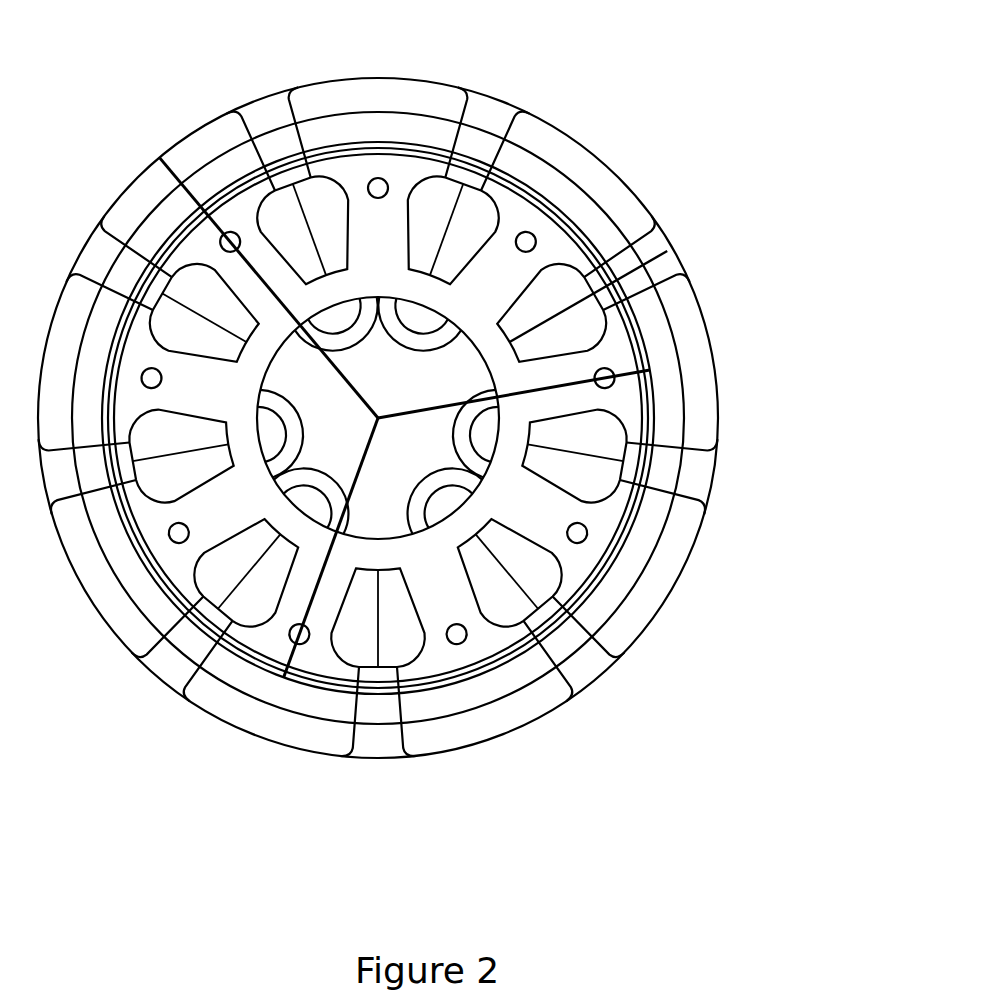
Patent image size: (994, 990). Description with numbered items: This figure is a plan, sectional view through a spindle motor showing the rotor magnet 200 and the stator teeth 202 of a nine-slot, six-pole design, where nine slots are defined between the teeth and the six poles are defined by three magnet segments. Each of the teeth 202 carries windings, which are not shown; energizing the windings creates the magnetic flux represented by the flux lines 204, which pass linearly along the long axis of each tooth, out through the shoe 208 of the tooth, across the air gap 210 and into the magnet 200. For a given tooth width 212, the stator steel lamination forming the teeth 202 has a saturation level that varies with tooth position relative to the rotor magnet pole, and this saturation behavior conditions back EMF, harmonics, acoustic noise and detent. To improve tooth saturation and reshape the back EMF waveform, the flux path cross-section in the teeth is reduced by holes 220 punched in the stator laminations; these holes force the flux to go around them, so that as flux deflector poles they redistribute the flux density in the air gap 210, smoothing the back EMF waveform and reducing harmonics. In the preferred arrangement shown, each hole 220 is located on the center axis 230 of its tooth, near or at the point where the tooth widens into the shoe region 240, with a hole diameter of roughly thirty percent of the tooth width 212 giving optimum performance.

The magnet 200 is at (578, 282).
The stator teeth 202 is at (567, 490).
The flux lines 204 is at (400, 72).
The shoe 208 is at (667, 251).
The air gap 210 is at (533, 170).
The tooth width 212 is at (573, 314).
The holes 220 is at (577, 534).
The center axis 230 is at (575, 350).
The shoe region 240 is at (667, 403).